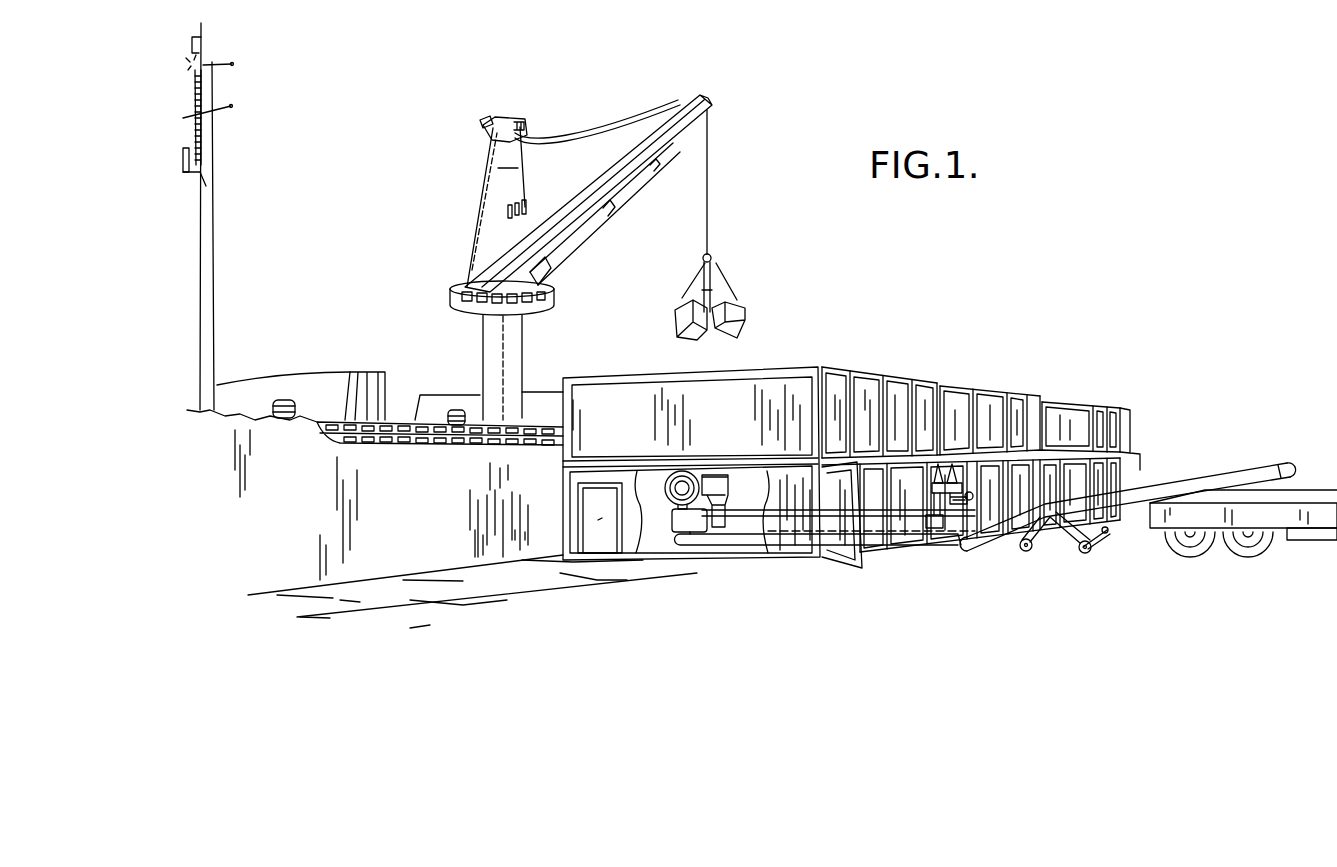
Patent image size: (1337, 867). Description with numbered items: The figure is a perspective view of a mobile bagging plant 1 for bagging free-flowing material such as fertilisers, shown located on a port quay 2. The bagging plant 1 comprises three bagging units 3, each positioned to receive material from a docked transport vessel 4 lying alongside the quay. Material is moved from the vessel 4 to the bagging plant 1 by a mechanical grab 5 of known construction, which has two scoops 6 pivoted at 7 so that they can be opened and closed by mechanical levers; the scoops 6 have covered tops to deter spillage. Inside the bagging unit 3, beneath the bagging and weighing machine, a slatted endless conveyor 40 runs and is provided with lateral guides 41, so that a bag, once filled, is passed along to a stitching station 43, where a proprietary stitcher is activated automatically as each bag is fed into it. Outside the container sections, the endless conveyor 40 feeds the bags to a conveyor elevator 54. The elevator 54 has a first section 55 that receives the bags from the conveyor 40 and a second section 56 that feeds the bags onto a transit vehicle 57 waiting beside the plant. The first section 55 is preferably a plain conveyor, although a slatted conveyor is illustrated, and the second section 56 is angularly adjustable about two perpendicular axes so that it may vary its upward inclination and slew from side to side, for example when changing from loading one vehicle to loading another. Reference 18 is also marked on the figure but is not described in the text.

The mobile bagging plant 1 is at (893, 350).
The port quay 2 is at (592, 630).
The bagging unit 3 is at (763, 562).
The docked transport vessel 4 is at (426, 463).
The mechanical grab 5 is at (762, 296).
The scoop 6 is at (672, 317).
The pivot 7 is at (703, 258).
The cyclone separator 18 is at (656, 484).
The slatted endless conveyor 40 is at (905, 538).
The lateral guides 41 is at (873, 512).
The stitching station 43 is at (935, 498).
The conveyor elevator 54 is at (1048, 538).
The first section 55 is at (982, 542).
The second section 56 is at (1115, 505).
The transit vehicle 57 is at (1220, 520).